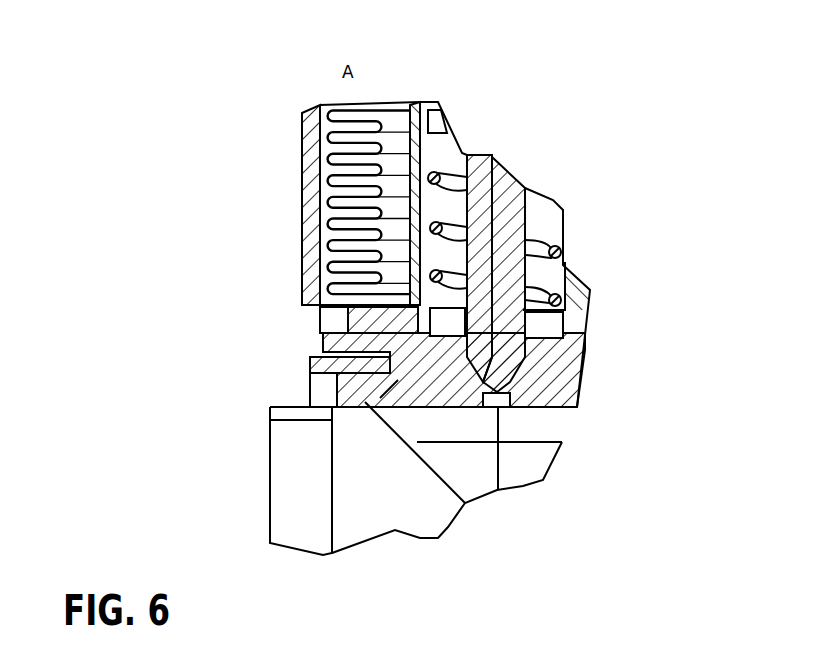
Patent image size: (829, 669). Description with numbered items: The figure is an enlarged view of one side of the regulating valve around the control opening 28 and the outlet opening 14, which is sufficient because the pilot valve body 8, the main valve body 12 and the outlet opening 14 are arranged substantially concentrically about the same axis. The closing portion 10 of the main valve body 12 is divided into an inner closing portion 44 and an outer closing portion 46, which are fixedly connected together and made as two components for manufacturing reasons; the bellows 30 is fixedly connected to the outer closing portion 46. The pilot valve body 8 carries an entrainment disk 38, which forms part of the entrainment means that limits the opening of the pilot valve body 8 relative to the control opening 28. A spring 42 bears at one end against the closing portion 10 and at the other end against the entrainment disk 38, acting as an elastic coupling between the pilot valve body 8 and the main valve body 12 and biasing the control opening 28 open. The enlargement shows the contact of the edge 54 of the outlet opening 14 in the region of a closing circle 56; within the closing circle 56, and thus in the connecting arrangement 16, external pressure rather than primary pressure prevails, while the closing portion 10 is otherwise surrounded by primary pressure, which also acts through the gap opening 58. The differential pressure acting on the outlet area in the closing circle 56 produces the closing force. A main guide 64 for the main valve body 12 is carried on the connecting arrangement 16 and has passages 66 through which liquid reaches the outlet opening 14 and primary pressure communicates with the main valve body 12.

The pilot valve body 8 is at (525, 207).
The closing portion 10 is at (547, 405).
The main valve body 12 is at (435, 85).
The outlet opening 14 is at (563, 398).
The connecting arrangement 16 is at (507, 407).
The control opening 28 is at (480, 480).
The bellows 30 is at (346, 243).
The entrainment disk 38 is at (443, 122).
The spring 42 is at (558, 226).
The inner closing portion 44 is at (420, 407).
The outer closing portion 46 is at (365, 390).
The edge 54 is at (393, 392).
The closing circle 56 is at (390, 392).
The gap opening 58 is at (342, 353).
The main guide 64 is at (312, 159).
The passages 66 is at (322, 320).